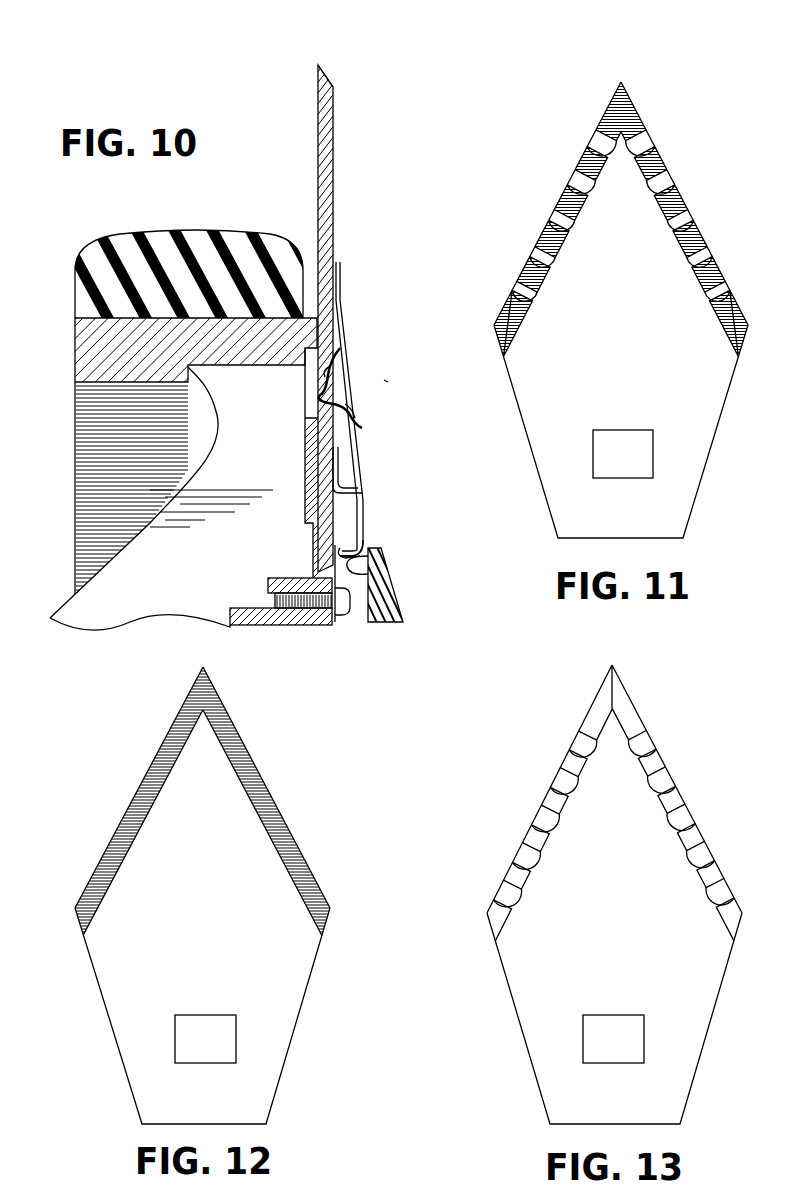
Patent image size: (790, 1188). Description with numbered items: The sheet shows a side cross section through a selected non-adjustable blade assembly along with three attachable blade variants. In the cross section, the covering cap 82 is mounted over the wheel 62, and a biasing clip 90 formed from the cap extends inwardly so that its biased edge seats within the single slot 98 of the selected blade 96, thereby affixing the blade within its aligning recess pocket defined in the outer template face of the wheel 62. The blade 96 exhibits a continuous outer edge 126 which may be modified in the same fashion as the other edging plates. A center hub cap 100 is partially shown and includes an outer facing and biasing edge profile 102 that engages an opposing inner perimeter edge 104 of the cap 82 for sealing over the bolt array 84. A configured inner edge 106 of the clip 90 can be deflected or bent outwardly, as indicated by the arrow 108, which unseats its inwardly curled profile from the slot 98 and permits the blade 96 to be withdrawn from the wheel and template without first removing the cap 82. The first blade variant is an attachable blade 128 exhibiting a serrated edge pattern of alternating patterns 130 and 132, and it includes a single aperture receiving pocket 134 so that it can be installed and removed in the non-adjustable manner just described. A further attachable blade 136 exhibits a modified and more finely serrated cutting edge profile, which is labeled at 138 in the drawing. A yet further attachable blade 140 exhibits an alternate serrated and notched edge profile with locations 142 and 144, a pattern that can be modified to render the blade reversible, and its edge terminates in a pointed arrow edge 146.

In FIG. 10, the wheel 62 is at (216, 232).
In FIG. 10, the covering cap 82 is at (362, 440).
In FIG. 10, the bolt array 84 is at (352, 612).
In FIG. 10, the biasing clip 90 is at (332, 386).
In FIG. 10, the blade 96 is at (334, 206).
In FIG. 10, the slot 98 is at (325, 377).
In FIG. 10, the center hub cap 100 is at (403, 608).
In FIG. 10, the biasing edge profile 102 is at (360, 578).
In FIG. 10, the inner perimeter edge 104 is at (362, 546).
In FIG. 10, the inner edge of clip 106 is at (347, 407).
In FIG. 10, the arrow 108 is at (381, 377).
In FIG. 10, the continuous outer edge 126 is at (323, 68).
In FIG. 11, the attachable blade 128 is at (698, 392).
In FIG. 11, the serrated edge pattern 130 is at (505, 307).
In FIG. 11, the alternating serrated edge pattern 132 is at (520, 290).
In FIG. 11, the aperture receiving pocket 134 is at (642, 472).
In FIG. 12, the attachable blade 136 is at (122, 1012).
In FIG. 12, the serrated edge 138 is at (128, 805).
In FIG. 13, the attachable blade 140 is at (535, 1015).
In FIG. 13, the notched edge location 142 is at (501, 892).
In FIG. 13, the serrated edge location 144 is at (543, 803).
In FIG. 13, the pointed arrow edge 146 is at (612, 665).